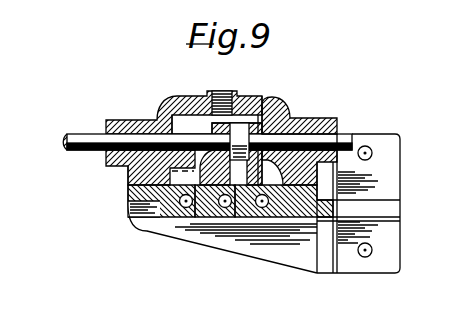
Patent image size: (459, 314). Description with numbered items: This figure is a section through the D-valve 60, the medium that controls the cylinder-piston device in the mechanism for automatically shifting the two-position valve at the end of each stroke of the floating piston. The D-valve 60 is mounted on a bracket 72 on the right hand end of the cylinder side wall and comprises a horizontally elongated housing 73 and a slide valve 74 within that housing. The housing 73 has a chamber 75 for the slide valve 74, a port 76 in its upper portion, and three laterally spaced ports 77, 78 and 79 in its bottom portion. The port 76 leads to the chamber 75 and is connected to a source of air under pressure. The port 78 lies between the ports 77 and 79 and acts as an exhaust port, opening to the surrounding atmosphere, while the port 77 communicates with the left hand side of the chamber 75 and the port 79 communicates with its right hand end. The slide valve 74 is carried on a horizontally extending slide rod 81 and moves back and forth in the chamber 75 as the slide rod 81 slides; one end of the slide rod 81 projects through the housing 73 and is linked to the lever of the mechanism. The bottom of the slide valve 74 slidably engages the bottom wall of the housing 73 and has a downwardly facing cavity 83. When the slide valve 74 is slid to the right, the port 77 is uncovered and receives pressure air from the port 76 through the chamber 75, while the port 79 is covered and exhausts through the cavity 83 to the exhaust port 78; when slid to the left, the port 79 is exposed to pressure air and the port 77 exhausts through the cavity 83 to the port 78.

The D-valve 60 is at (289, 108).
The bracket 72 is at (259, 248).
The housing 73 is at (182, 128).
The slide valve 74 is at (258, 147).
The chamber 75 is at (158, 118).
The port 76 is at (225, 90).
The port 77 is at (170, 210).
The exhaust port 78 is at (203, 212).
The port 79 is at (243, 208).
The slide rod 81 is at (76, 150).
The cavity 83 is at (266, 204).